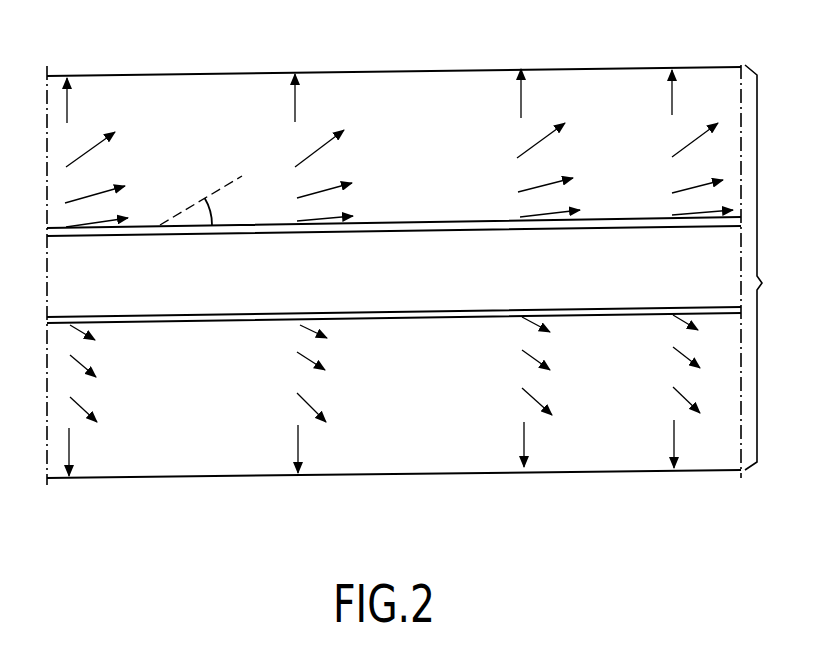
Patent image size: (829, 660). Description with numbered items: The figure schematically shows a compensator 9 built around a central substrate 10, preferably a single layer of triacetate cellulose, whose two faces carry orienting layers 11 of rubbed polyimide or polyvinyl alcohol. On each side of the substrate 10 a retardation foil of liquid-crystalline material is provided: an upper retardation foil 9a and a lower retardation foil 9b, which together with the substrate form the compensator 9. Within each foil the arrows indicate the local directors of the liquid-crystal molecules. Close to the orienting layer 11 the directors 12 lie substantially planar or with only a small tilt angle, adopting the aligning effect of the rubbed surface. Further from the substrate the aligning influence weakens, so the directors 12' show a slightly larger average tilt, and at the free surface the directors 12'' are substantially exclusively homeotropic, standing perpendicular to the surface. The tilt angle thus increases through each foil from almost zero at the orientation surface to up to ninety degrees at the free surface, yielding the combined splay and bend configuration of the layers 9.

The compensator 9 is at (762, 283).
The retardation foil 9a is at (430, 98).
The retardation foil 9b is at (440, 443).
The substrate 10 is at (65, 274).
The orienting layer 11 is at (47, 233).
The directors 12 is at (399, 278).
The directors 12' is at (394, 272).
The directors 12'' is at (370, 282).